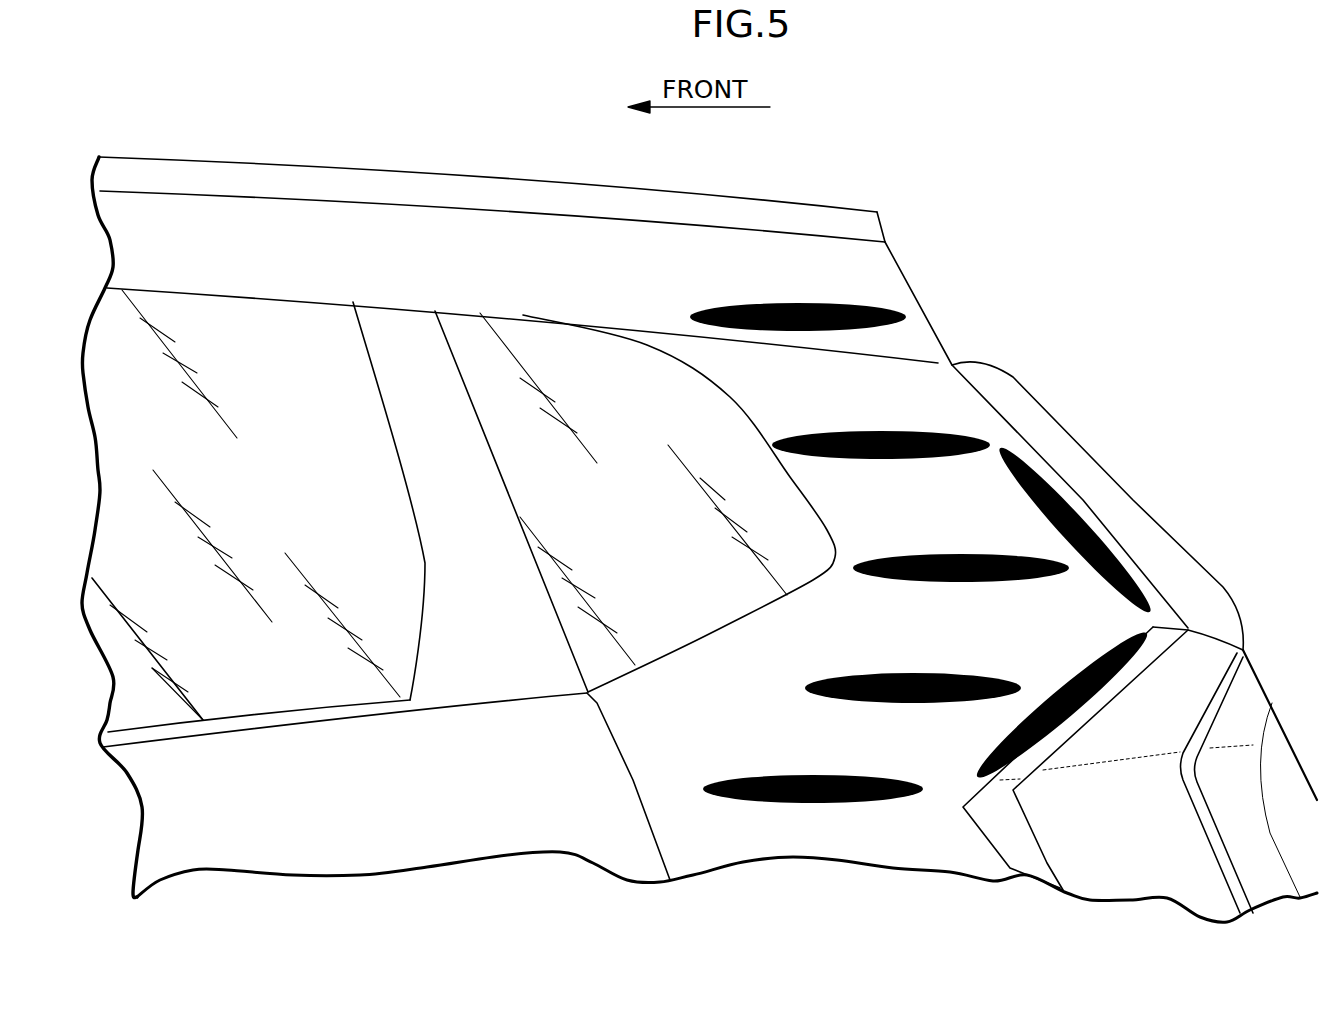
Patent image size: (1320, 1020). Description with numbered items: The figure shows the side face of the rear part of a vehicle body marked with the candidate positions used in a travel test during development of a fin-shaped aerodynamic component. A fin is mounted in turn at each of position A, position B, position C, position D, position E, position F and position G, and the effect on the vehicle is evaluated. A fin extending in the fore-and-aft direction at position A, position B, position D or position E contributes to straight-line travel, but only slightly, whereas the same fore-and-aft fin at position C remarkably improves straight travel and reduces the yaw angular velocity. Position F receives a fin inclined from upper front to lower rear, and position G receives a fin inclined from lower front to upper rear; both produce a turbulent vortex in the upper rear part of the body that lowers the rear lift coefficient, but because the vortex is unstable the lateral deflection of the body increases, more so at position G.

The position A is at (783, 310).
The position B is at (876, 430).
The position C is at (958, 552).
The position D is at (908, 671).
The position E is at (813, 776).
The position F is at (1072, 529).
The position G is at (1061, 705).